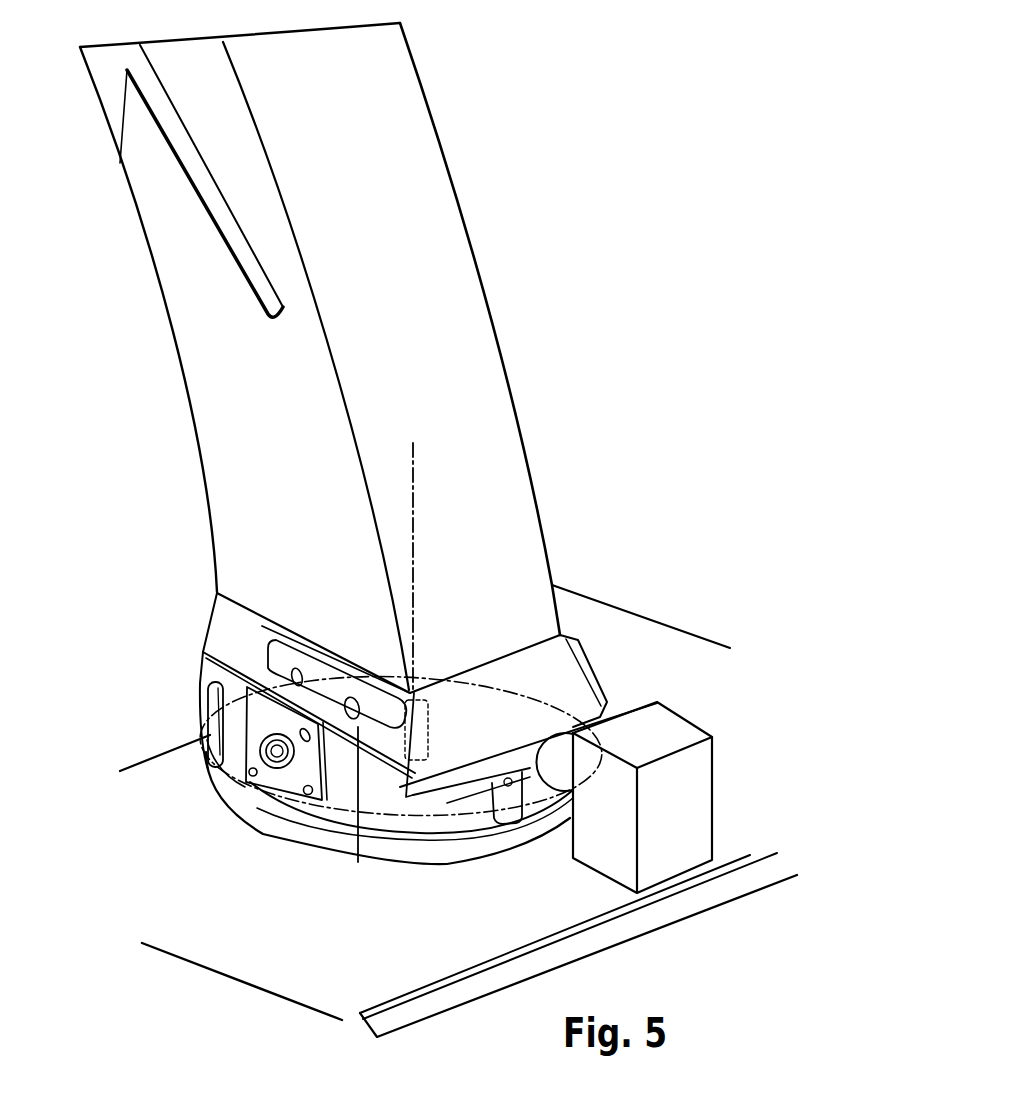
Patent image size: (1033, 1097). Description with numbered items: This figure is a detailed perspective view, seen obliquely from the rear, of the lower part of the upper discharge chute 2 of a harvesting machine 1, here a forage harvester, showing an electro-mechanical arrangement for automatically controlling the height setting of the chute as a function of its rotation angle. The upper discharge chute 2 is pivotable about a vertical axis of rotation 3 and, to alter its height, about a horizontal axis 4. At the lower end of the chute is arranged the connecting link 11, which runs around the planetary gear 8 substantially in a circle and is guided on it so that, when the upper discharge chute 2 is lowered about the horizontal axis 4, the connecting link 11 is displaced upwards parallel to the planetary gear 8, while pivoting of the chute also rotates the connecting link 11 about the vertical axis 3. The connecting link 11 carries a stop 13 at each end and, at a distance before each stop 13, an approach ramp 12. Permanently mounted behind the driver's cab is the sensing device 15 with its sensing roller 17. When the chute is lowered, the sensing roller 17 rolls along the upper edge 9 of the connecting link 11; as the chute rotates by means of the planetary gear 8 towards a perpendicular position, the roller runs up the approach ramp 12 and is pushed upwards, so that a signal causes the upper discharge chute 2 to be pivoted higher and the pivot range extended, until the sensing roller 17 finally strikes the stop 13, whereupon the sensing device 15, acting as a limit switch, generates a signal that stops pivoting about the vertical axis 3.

The harvesting machine 1 is at (598, 602).
The upper discharge chute 2 is at (440, 182).
The vertical axis of rotation 3 is at (413, 470).
The horizontal axis 4 is at (264, 758).
The planetary gear 8 is at (228, 757).
The upper edge 9 is at (421, 842).
The connecting link 11 is at (477, 851).
The approach ramp 12 is at (250, 777).
The stop 13 is at (209, 727).
The sensing device 15 is at (647, 672).
The sensing roller 17 is at (560, 760).